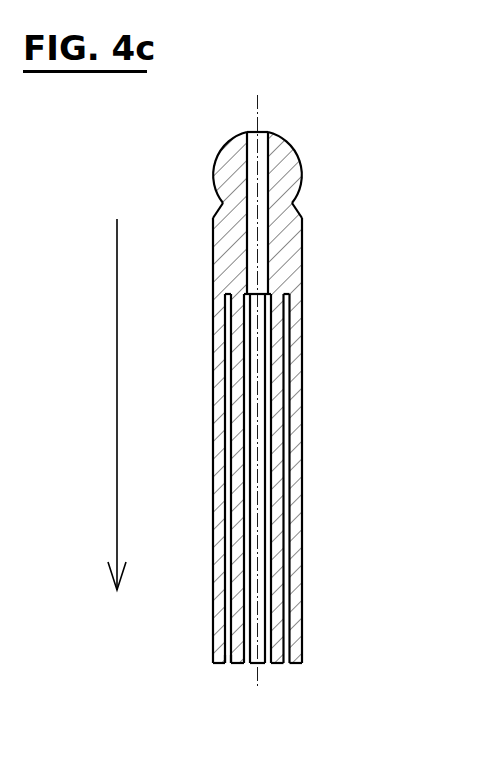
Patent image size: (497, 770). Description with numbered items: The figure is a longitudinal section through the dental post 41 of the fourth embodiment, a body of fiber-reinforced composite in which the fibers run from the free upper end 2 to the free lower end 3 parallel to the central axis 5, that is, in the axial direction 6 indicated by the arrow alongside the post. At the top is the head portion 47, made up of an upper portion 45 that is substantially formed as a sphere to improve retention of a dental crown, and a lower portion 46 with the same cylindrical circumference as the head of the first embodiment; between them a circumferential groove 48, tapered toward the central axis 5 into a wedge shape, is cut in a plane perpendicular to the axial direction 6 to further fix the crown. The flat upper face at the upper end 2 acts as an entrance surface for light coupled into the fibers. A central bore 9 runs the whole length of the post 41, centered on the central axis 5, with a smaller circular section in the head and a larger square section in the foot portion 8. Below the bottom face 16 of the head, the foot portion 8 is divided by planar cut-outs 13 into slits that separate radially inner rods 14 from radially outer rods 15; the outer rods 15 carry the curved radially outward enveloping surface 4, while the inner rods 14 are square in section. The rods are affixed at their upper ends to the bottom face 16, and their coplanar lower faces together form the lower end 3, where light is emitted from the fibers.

The dental post 41 is at (332, 105).
The upper portion 45 is at (295, 172).
The upper end 2 is at (217, 123).
The circumferential groove 48 is at (223, 206).
The head portion 47 is at (300, 230).
The lower portion 46 is at (303, 245).
The bottom face 16 is at (290, 293).
The central bore 9 is at (248, 110).
The central axis 5 is at (280, 371).
The foot portion 8 is at (219, 455).
The enveloping surface 4 is at (213, 412).
The radially outer rods 15 is at (225, 526).
The radially inner rods 14 is at (240, 640).
The lower end 3 is at (262, 664).
The planar cut-outs 13 is at (226, 679).
The axial direction 6 is at (91, 404).